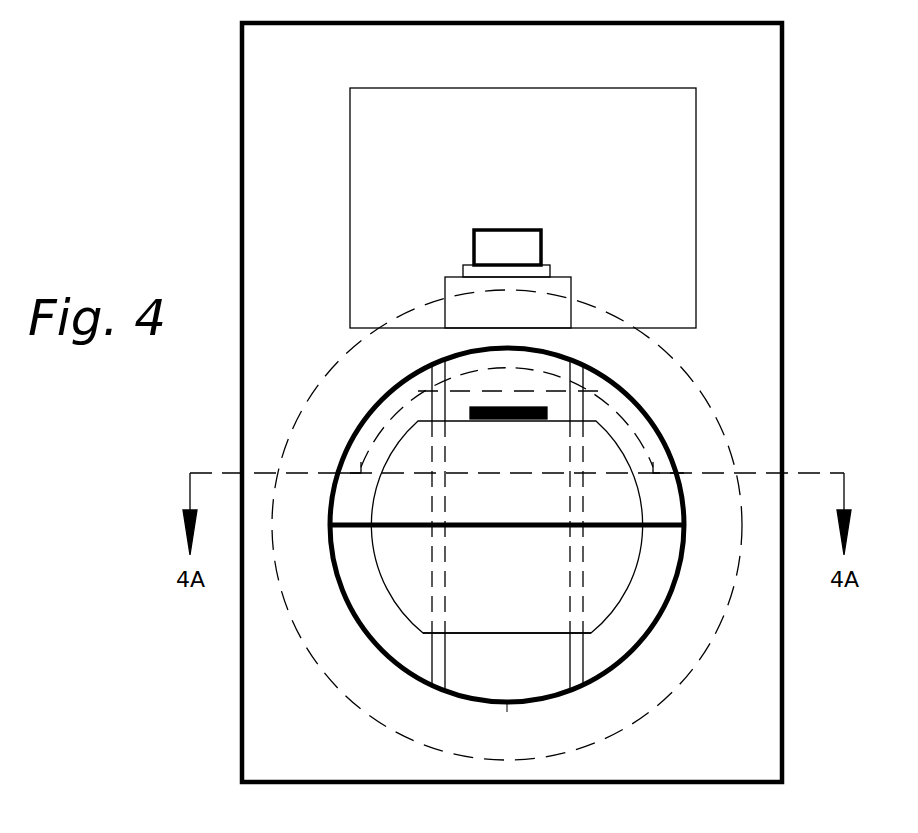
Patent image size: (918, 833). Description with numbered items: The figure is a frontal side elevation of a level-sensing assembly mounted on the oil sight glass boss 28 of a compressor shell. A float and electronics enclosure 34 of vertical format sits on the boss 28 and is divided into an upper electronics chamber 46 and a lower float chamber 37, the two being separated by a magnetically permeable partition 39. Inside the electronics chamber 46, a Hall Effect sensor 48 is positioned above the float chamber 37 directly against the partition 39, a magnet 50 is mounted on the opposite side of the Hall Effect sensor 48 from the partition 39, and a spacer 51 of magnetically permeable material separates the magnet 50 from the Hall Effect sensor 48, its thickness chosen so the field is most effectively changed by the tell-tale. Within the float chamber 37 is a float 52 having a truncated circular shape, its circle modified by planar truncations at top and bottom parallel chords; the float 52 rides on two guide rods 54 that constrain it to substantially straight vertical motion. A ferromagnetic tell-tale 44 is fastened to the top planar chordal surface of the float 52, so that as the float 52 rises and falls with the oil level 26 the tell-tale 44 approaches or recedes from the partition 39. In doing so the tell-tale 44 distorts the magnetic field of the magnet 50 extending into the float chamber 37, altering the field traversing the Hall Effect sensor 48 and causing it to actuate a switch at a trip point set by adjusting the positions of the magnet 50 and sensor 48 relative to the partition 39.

The float and electronics enclosure 34 is at (242, 190).
The electronics chamber 46 is at (523, 208).
The Hall Effect sensor 48 is at (455, 277).
The magnet 50 is at (530, 229).
The spacer 51 is at (550, 270).
The magnetically permeable partition 39 is at (492, 338).
The float chamber 37 is at (355, 495).
The boss 28 is at (732, 453).
The ferromagnetic tell-tale 44 is at (531, 421).
The oil level 26 is at (537, 525).
The float 52 is at (507, 595).
The guide rods 54 is at (570, 655).